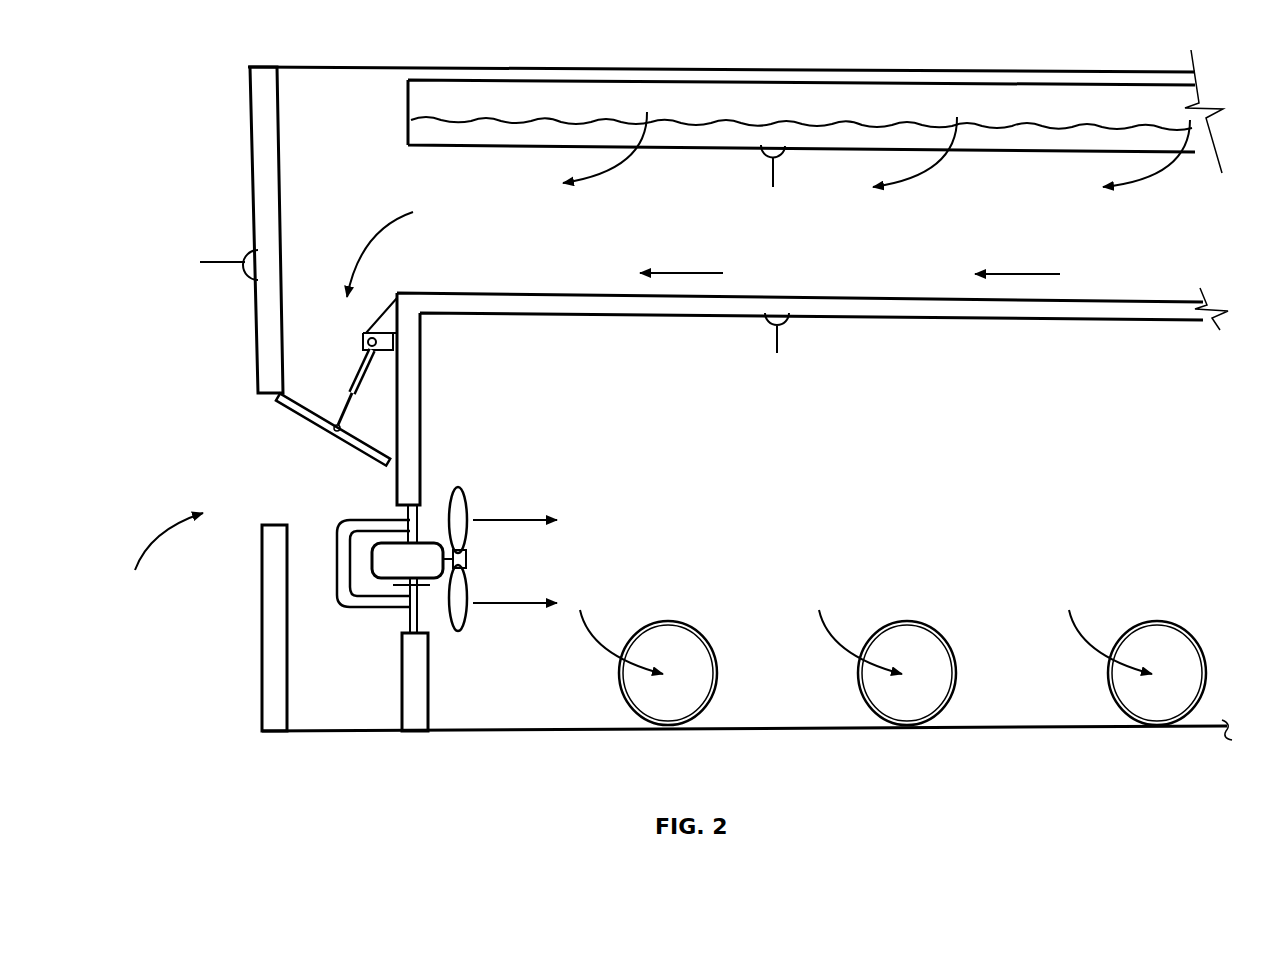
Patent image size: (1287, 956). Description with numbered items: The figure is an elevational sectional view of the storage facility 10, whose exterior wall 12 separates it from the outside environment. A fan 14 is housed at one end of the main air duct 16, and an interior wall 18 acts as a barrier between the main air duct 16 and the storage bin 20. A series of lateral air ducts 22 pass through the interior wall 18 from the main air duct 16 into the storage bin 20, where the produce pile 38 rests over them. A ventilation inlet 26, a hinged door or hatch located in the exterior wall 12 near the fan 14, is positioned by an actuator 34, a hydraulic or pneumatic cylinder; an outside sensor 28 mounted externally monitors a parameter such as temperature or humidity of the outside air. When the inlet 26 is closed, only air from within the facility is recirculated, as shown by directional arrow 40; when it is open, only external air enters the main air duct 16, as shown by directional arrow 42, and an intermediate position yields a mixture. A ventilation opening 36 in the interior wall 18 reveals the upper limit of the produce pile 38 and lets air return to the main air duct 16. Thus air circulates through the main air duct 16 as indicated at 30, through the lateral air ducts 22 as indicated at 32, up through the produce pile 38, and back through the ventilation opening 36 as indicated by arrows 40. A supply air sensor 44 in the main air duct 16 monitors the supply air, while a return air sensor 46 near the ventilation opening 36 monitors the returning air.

The storage facility 10 is at (342, 760).
The exterior wall 12 is at (250, 138).
The fan 14 is at (440, 520).
The main air duct 16 is at (816, 472).
The interior wall 18 is at (310, 97).
The storage bin 20 is at (758, 116).
The lateral air duct 22 is at (705, 635).
The ventilation inlet 26 is at (342, 447).
The outside sensor 28 is at (252, 275).
The air circulation through main air duct 30 is at (517, 518).
The air circulation through lateral air ducts 32 is at (588, 645).
The actuator 34 is at (345, 366).
The ventilation opening 36 is at (548, 80).
The produce pile 38 is at (900, 125).
The directional arrow (recirculated air) 40 is at (630, 165).
The directional arrow (external air) 42 is at (160, 528).
The supply air sensor 44 is at (790, 325).
The return air sensor 46 is at (788, 157).